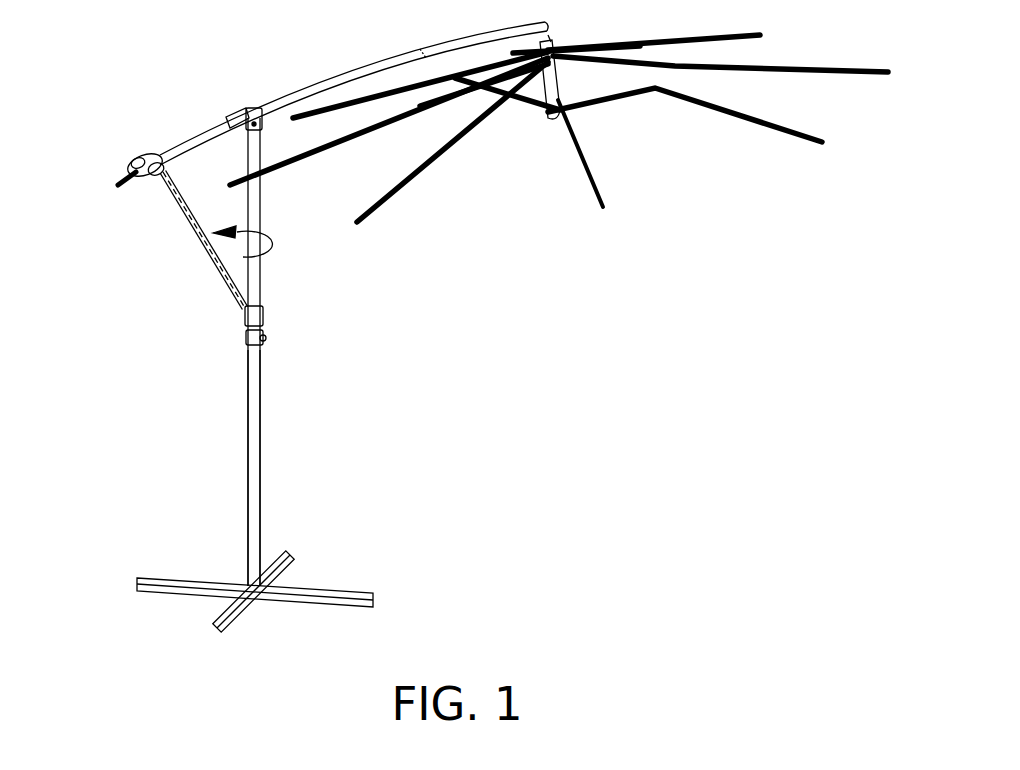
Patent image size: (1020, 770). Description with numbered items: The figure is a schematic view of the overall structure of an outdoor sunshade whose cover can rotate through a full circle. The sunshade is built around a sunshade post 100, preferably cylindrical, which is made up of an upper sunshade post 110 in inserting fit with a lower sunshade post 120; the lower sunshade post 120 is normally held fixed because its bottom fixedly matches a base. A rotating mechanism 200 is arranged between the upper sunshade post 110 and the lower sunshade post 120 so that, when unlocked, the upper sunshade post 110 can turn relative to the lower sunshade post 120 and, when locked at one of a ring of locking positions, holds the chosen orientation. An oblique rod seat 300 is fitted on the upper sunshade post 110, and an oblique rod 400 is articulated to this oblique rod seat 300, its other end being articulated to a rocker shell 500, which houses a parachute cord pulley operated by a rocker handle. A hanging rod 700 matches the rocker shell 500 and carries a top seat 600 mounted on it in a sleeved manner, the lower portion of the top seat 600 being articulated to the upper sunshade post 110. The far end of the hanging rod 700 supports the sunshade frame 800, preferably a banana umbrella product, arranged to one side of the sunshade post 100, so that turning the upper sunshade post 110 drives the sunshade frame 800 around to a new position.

The sunshade post 100 is at (247, 347).
The upper sunshade post 110 is at (257, 273).
The lower sunshade post 120 is at (255, 487).
The rotating mechanism 200 is at (265, 343).
The oblique rod seat 300 is at (247, 320).
The oblique rod 400 is at (190, 233).
The rocker shell 500 is at (133, 172).
The top seat 600 is at (240, 110).
The hanging rod 700 is at (322, 79).
The sunshade frame 800 is at (570, 117).